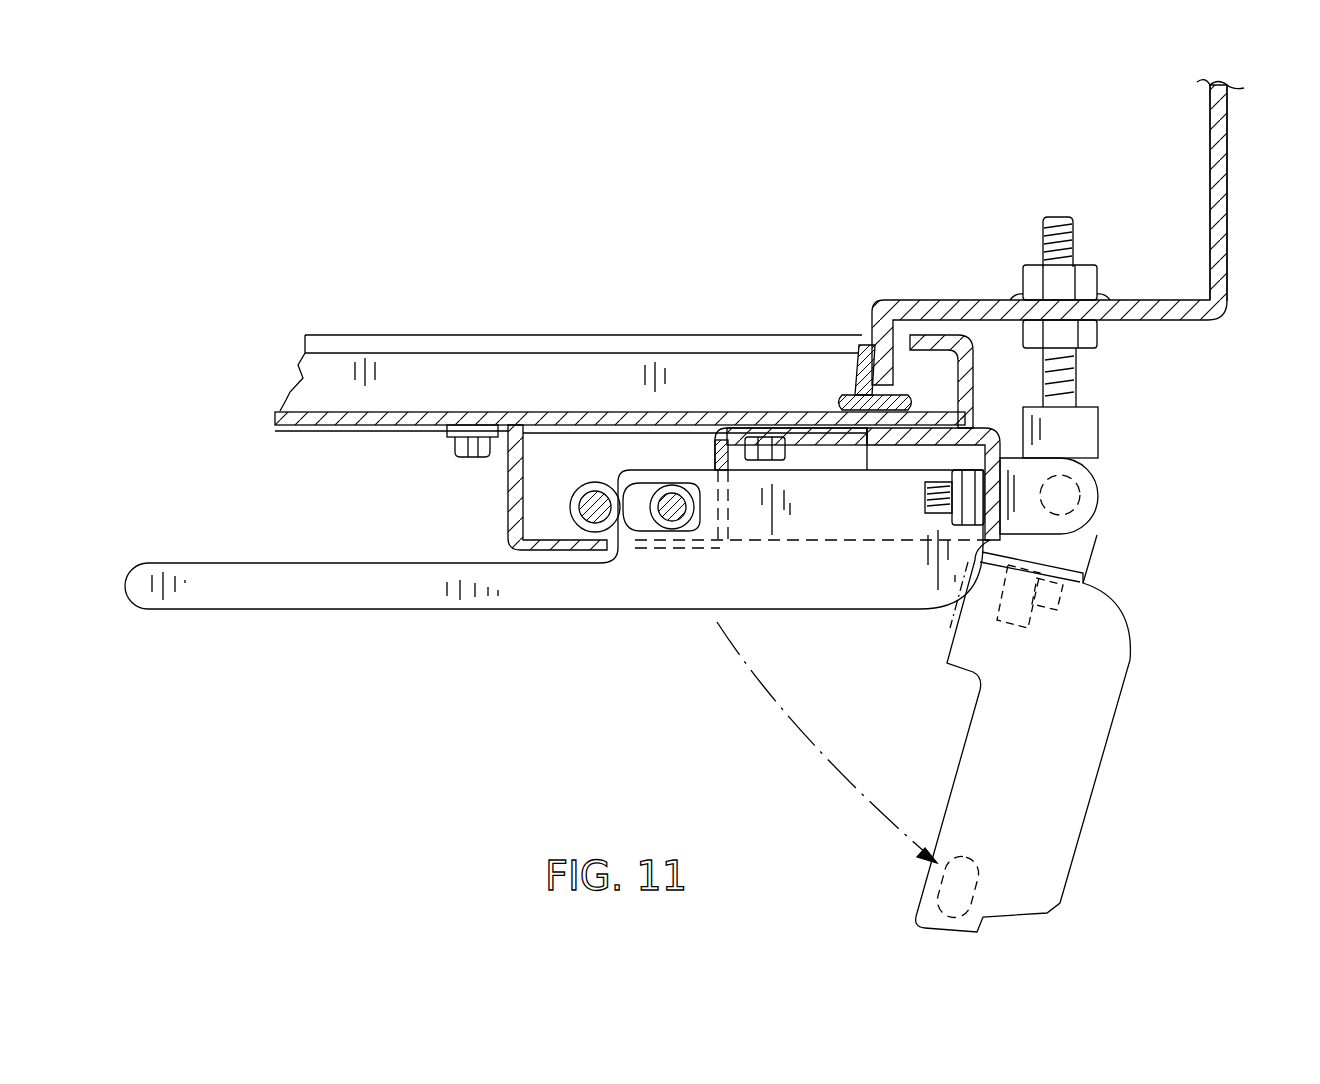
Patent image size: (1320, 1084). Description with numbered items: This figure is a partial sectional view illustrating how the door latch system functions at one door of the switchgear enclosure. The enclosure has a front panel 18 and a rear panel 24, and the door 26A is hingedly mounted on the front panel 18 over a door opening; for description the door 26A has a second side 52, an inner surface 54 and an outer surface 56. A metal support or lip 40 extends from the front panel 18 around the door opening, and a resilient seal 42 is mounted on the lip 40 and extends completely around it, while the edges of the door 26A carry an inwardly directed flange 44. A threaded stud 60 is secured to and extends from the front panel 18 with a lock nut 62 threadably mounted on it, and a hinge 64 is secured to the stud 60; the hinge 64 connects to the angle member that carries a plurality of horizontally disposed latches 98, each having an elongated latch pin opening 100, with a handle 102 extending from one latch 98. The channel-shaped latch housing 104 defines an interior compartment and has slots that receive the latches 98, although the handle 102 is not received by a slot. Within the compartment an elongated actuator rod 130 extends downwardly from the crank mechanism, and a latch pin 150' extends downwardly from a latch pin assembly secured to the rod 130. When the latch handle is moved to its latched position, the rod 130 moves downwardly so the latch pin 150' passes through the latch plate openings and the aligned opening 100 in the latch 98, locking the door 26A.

The front panel 18 is at (931, 299).
The rear panel 24 is at (1218, 231).
The door 26A is at (561, 410).
The lip 40 is at (866, 352).
The resilient seal 42 is at (840, 403).
The inwardly directed flange 44 is at (940, 345).
The second side 52 is at (973, 400).
The inner surface 54 is at (403, 408).
The outer surface 56 is at (385, 422).
The threaded stud 60 is at (1075, 245).
The lock nut 62 is at (1097, 335).
The hinge 64 is at (1112, 478).
The latch 98 is at (697, 614).
The latch pin opening 100 is at (643, 500).
The handle 102 is at (255, 561).
The latch housing 104 is at (503, 480).
The actuator rod 130 is at (590, 525).
The latch pin 150' is at (737, 580).